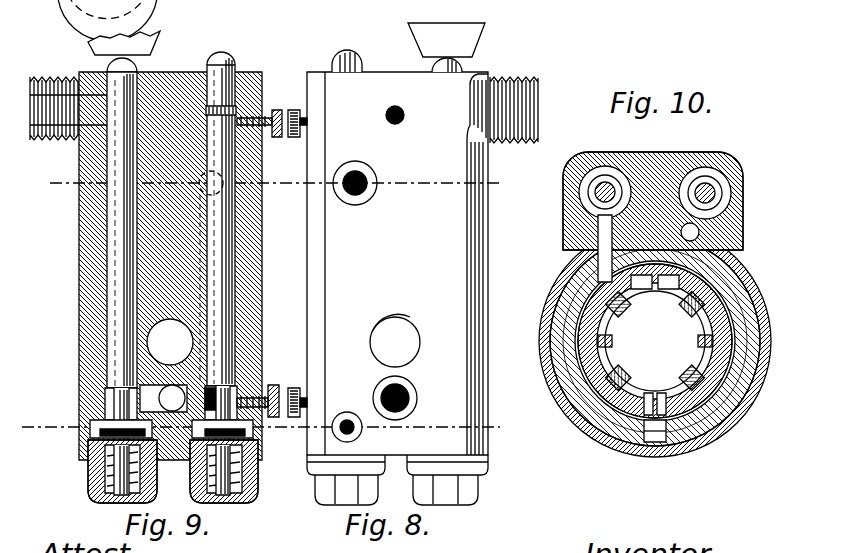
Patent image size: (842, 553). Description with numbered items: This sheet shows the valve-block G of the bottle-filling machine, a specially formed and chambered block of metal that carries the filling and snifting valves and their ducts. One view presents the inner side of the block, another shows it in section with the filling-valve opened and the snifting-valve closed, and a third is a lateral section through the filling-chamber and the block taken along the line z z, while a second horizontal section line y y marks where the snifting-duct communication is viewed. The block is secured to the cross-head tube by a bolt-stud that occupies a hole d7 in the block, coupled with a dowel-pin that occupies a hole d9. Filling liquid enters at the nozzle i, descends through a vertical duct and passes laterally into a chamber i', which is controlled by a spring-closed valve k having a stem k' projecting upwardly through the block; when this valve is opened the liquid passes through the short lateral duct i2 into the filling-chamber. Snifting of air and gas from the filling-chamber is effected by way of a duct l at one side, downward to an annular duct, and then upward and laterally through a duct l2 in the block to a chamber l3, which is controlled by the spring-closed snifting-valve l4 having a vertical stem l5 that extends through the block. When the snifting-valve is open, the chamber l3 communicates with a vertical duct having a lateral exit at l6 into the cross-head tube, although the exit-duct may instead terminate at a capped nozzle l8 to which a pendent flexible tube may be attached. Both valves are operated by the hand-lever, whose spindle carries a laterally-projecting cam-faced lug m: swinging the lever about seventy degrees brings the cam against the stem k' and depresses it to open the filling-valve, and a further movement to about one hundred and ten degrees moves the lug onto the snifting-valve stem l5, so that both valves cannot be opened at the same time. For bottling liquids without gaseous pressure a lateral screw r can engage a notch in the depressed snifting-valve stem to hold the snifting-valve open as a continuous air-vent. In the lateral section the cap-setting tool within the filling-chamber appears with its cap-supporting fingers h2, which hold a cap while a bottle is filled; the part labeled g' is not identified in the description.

In FIG. 9, the valve-block G is at (155, 266).
In FIG. 8, the valve-block G is at (397, 263).
In FIG. 10, the valve-block G is at (653, 189).
In FIG. 9, the nozzle i is at (59, 108).
In FIG. 8, the nozzle i is at (520, 110).
In FIG. 9, the chamber i' is at (56, 449).
In FIG. 10, the chamber i' is at (686, 326).
In FIG. 9, the lateral duct i2 is at (163, 398).
In FIG. 8, the lateral duct i2 is at (412, 393).
In FIG. 9, the spring-closed valve k is at (99, 471).
In FIG. 10, the spring-closed valve k is at (685, 203).
In FIG. 9, the stem k' is at (107, 270).
In FIG. 8, the stem k' is at (473, 57).
In FIG. 10, the duct l is at (700, 445).
In FIG. 8, the duct l2 is at (356, 434).
In FIG. 10, the duct l2 is at (598, 240).
In FIG. 9, the chamber l3 is at (257, 470).
In FIG. 10, the chamber l3 is at (579, 206).
In FIG. 9, the spring-closed snifting-valve l4 is at (250, 432).
In FIG. 10, the spring-closed snifting-valve l4 is at (588, 195).
In FIG. 9, the vertical stem l5 is at (233, 56).
In FIG. 8, the vertical stem l5 is at (334, 57).
In FIG. 9, the lateral exit l6 is at (211, 277).
In FIG. 8, the lateral exit l6 is at (364, 178).
In FIG. 9, the capped nozzle l8 is at (273, 384).
In FIG. 8, the capped nozzle l8 is at (304, 394).
In FIG. 9, the cam-faced lug m is at (124, 43).
In FIG. 8, the cam-faced lug m is at (446, 40).
In FIG. 9, the lateral screw r is at (259, 111).
In FIG. 8, the lateral screw r is at (302, 119).
In FIG. 9, the hole d7 is at (170, 342).
In FIG. 8, the hole d7 is at (395, 340).
In FIG. 8, the hole d9 is at (402, 110).
In FIG. 10, the ring g' is at (669, 341).
In FIG. 10, the cap-supporting fingers h2 is at (655, 341).
In FIG. 9, the section line y is at (266, 183).
In FIG. 8, the section line y is at (506, 183).
In FIG. 9, the section line z is at (258, 427).
In FIG. 8, the section line z is at (508, 427).